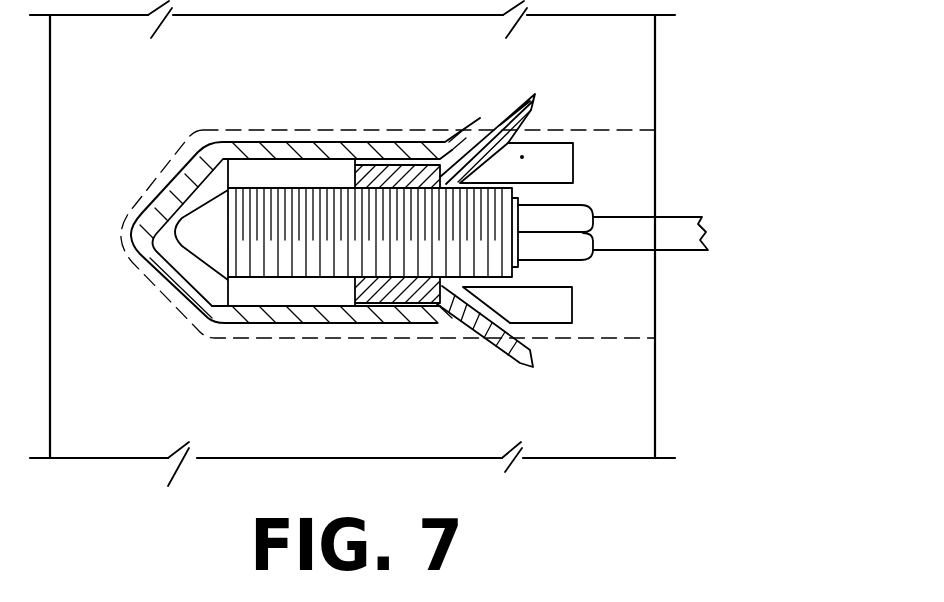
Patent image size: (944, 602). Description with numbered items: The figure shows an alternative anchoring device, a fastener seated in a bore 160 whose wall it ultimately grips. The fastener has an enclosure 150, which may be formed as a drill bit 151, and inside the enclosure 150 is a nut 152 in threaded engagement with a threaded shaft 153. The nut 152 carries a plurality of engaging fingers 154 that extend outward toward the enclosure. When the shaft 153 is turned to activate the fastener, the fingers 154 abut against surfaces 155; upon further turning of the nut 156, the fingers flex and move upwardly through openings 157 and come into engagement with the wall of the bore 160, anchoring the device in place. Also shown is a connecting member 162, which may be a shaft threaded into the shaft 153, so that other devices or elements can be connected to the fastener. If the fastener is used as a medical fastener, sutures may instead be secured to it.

The enclosure 150 is at (178, 263).
The drill bit 151 is at (155, 213).
The nut 152 is at (380, 186).
The threaded shaft 153 is at (263, 210).
The engaging fingers 154 is at (518, 362).
The surfaces 155 is at (463, 286).
The nut 156 is at (592, 212).
The openings 157 is at (462, 326).
The bore 160 is at (636, 126).
The connecting member 162 is at (705, 210).